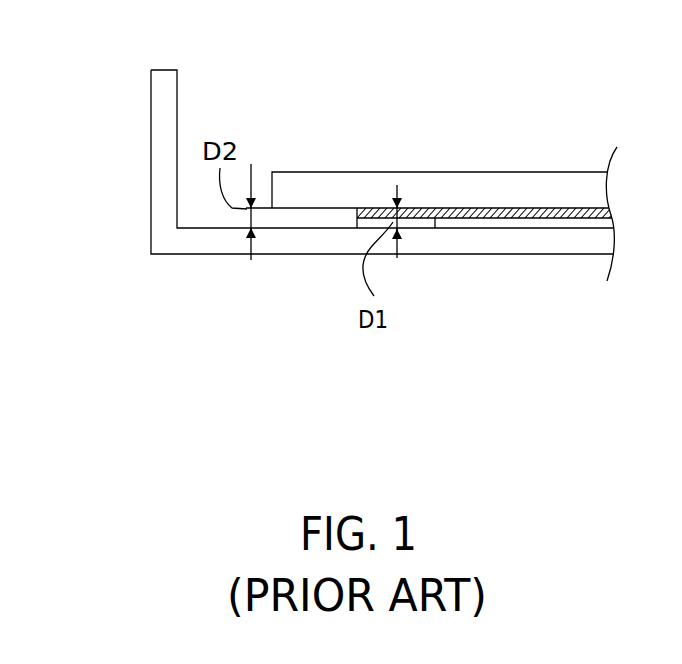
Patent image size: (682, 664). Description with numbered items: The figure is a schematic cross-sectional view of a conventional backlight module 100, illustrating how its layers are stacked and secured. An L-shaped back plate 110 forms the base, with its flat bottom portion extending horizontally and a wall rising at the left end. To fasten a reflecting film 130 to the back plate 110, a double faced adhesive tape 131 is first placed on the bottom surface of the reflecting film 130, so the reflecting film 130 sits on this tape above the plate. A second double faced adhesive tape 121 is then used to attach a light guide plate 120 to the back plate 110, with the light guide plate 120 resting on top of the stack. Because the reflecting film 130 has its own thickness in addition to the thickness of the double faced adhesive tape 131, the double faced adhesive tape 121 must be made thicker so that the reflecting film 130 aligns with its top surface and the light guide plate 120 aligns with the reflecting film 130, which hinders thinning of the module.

The conventional backlight module 100 is at (62, 32).
The back plate 110 is at (200, 243).
The light guide plate 120 is at (493, 187).
The double faced adhesive tape 121 is at (313, 245).
The reflecting film 130 is at (533, 220).
The double faced adhesive tape 131 is at (425, 222).